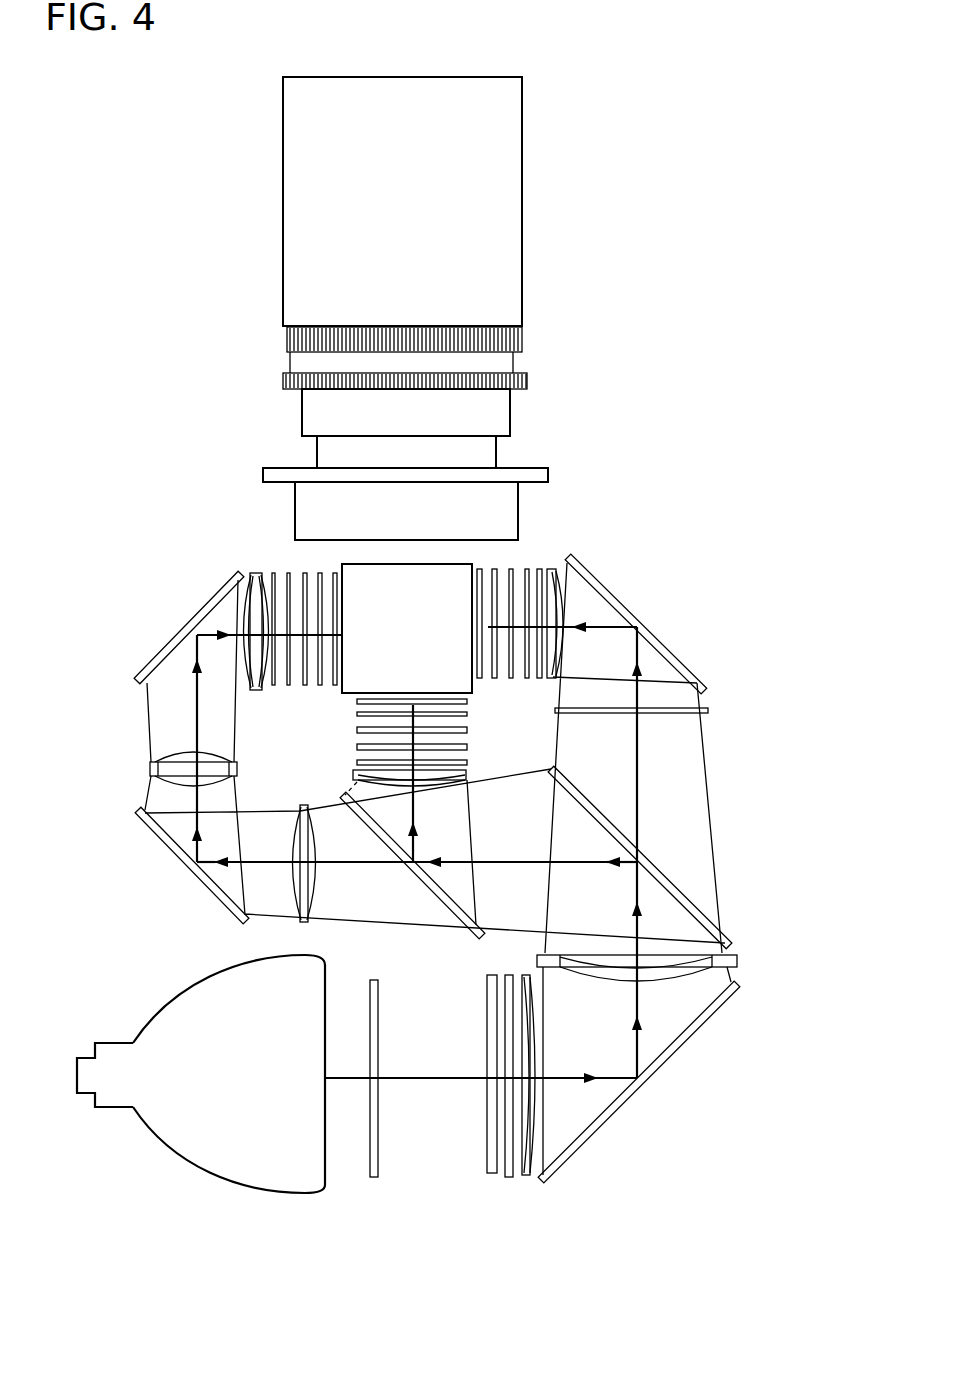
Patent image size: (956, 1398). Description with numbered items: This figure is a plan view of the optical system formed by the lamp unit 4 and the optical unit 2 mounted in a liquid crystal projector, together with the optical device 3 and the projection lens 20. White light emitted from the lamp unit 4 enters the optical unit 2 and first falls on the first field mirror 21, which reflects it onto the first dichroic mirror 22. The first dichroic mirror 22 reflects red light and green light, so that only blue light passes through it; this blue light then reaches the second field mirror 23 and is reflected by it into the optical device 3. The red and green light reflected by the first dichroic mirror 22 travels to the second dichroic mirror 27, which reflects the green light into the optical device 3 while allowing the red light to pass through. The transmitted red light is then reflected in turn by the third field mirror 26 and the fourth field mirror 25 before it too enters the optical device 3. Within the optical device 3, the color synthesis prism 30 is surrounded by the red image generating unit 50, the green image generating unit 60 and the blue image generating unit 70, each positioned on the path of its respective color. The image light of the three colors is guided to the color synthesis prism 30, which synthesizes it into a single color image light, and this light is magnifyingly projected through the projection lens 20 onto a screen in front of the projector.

The optical unit 2 is at (570, 1190).
The optical device 3 is at (290, 556).
The lamp unit 4 is at (233, 1183).
The projection lens 20 is at (438, 77).
The first field mirror 21 is at (648, 1075).
The first dichroic mirror 22 is at (670, 878).
The second field mirror 23 is at (658, 638).
The fourth field mirror 25 is at (188, 627).
The third field mirror 26 is at (170, 865).
The second dichroic mirror 27 is at (417, 880).
The color synthesis prism 30 is at (427, 667).
The red image generating unit 50 is at (277, 571).
The green image generating unit 60 is at (350, 724).
The blue image generating unit 70 is at (517, 567).